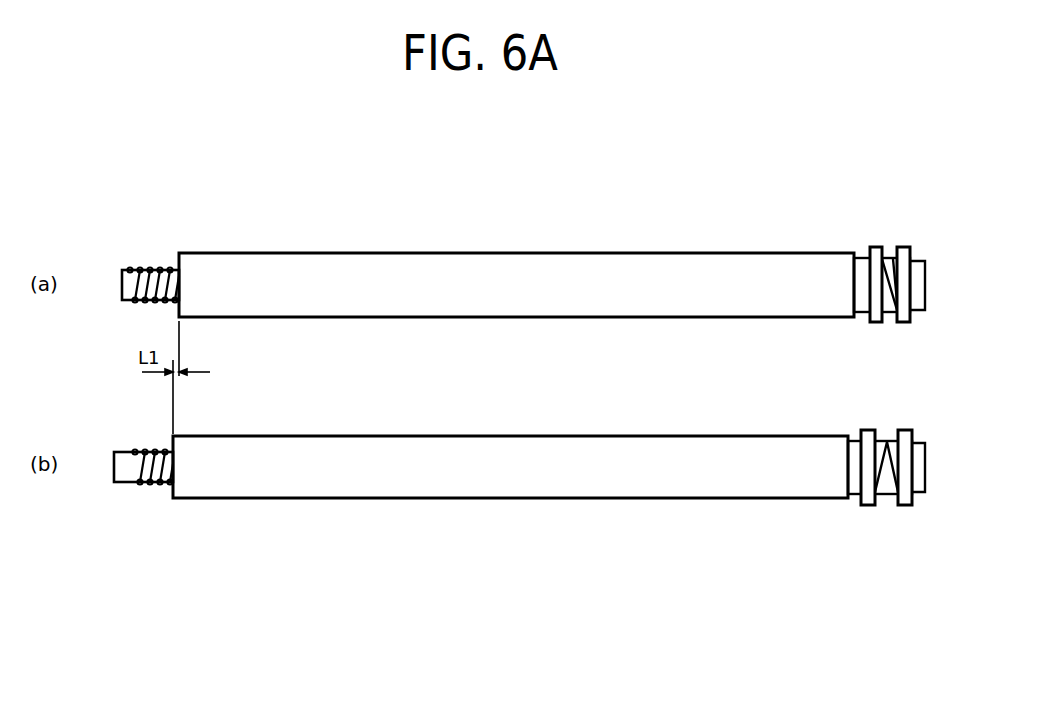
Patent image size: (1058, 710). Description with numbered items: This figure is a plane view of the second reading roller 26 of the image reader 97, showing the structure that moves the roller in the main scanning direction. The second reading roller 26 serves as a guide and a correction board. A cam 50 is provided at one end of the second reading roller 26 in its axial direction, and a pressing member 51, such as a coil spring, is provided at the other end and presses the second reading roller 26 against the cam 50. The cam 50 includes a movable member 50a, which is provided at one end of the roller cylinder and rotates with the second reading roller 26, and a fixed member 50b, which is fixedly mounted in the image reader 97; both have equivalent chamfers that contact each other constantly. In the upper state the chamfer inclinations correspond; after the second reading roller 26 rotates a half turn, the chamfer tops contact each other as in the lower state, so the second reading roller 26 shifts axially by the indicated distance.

The image reader 97 is at (630, 217).
The second reading roller 26 is at (344, 313).
The pressing member 51 is at (143, 268).
The cam 50 is at (868, 218).
The movable member 50a is at (886, 322).
The fixed member 50b is at (889, 256).